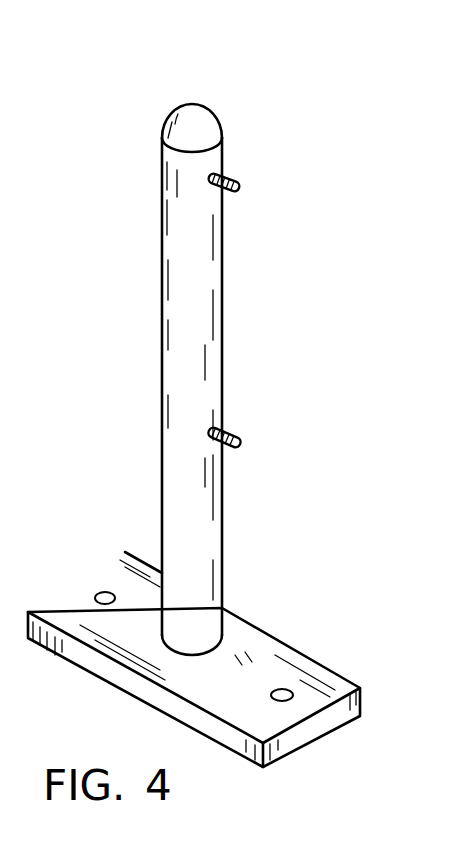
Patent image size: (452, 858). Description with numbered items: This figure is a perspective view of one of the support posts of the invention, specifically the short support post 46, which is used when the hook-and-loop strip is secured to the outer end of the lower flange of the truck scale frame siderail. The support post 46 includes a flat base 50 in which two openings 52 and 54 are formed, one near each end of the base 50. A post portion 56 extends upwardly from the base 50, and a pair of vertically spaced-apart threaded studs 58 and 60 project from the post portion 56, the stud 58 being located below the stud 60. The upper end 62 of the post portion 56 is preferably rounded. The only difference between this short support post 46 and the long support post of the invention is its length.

The short support post 46 is at (160, 263).
The base 50 is at (247, 643).
The opening 52 is at (100, 592).
The opening 54 is at (283, 691).
The post portion 56 is at (205, 383).
The threaded stud 58 is at (242, 432).
The threaded stud 60 is at (241, 184).
The upper end of the post portion 62 is at (206, 105).